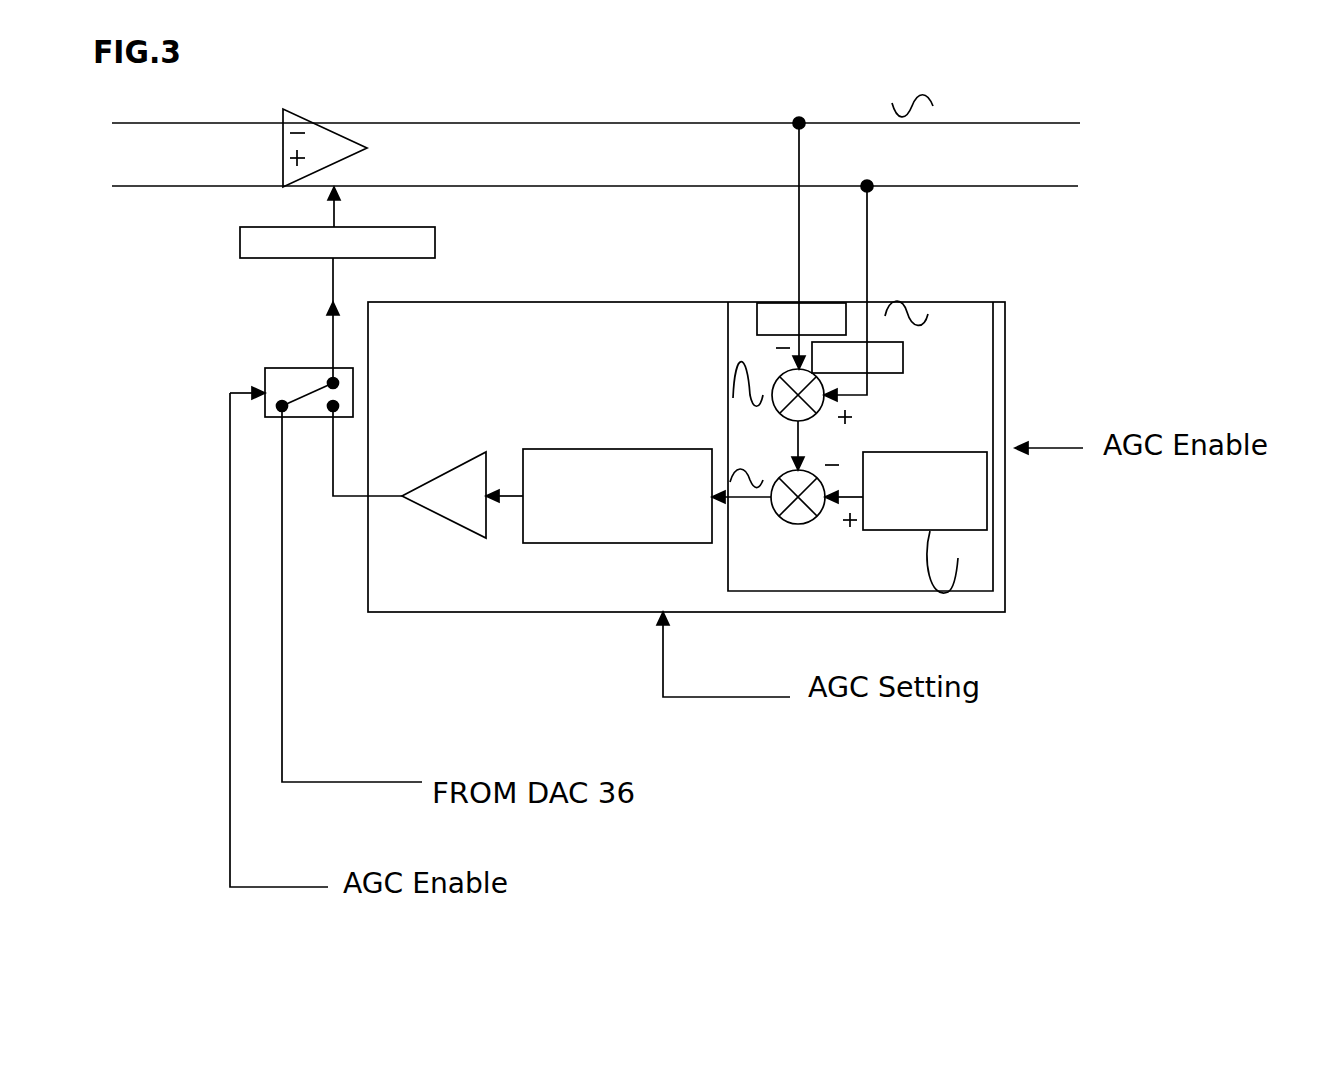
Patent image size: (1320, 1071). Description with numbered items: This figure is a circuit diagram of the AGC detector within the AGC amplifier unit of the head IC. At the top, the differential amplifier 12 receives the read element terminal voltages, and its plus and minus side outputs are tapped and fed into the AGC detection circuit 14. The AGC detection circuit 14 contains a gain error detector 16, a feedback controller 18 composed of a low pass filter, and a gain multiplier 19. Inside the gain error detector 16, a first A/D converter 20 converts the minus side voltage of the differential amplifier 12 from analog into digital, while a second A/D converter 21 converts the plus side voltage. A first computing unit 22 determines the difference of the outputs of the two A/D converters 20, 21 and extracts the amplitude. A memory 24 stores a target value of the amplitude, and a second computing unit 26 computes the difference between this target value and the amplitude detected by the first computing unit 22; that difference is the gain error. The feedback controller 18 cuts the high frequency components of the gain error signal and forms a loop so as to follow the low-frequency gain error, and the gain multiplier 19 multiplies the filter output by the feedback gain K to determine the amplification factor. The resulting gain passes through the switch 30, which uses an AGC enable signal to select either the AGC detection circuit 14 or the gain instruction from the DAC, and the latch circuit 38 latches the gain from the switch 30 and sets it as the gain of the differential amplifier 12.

The differential amplifier 12 is at (283, 110).
The AGC detection circuit 14 is at (435, 605).
The gain error detector 16 is at (967, 405).
The feedback controller 18 is at (580, 468).
The gain multiplier 19 is at (448, 477).
The first A/D converter 20 is at (757, 322).
The second A/D converter 21 is at (903, 366).
The first computing unit 22 is at (770, 405).
The memory 24 is at (917, 452).
The second computing unit 26 is at (810, 520).
The switch 30 is at (266, 414).
The latch circuit 38 is at (435, 241).